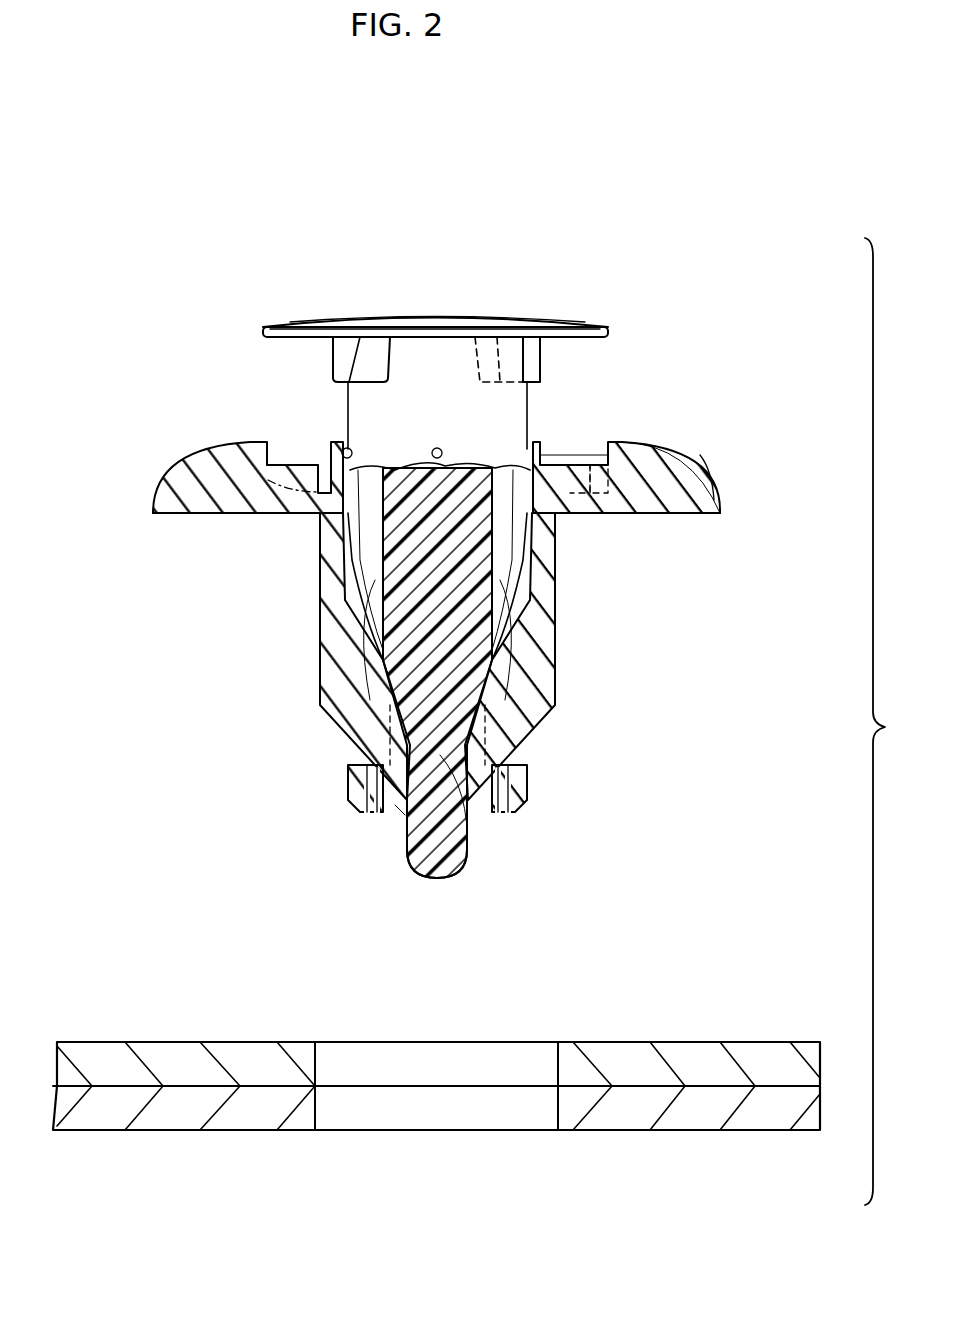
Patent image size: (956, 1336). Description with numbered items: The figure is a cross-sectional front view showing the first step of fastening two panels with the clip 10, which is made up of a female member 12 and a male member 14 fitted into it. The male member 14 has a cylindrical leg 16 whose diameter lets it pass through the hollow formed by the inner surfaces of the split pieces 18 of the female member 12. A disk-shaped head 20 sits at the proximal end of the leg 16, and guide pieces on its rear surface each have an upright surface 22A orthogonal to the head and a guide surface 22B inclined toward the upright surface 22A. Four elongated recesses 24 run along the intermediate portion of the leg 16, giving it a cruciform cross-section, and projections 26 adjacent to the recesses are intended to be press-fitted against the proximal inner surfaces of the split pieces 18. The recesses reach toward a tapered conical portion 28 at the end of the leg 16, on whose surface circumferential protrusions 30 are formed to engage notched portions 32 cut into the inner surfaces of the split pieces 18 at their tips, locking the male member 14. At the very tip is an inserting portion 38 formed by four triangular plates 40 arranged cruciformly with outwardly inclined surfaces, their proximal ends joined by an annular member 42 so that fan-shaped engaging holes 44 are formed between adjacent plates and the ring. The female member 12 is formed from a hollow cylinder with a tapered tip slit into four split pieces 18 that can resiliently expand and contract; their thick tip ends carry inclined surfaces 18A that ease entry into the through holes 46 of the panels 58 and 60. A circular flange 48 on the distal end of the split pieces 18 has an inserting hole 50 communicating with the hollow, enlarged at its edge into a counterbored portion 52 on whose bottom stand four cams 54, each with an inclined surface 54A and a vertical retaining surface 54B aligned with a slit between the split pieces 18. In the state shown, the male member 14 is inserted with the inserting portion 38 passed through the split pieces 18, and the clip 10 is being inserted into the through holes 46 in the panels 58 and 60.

The clip 10 is at (666, 284).
The female member 12 is at (716, 475).
The male member 14 is at (500, 300).
The leg 16 is at (380, 557).
The split pieces 18 is at (325, 606).
The inclined surfaces 18A is at (342, 728).
The head 20 is at (432, 312).
The upright surface 22A is at (338, 352).
The guide surface 22B is at (386, 360).
The elongated recesses 24 is at (512, 533).
The projections 26 is at (443, 450).
The conical portion 28 is at (470, 690).
The protrusions 30 is at (497, 652).
The notched portions 32 is at (463, 868).
The inserting portion 38 is at (416, 882).
The triangular plates 40 is at (478, 828).
The annular member 42 is at (527, 790).
The engaging holes 44 is at (398, 805).
The through holes 46 is at (543, 1010).
The flange 48 is at (678, 452).
The inserting hole 50 is at (350, 522).
The counterbored portion 52 is at (270, 440).
The cams 54 is at (292, 462).
The inclined surface 54A is at (330, 494).
The retaining surface 54B is at (530, 455).
The panel 58 is at (692, 1062).
The panel 60 is at (695, 1122).